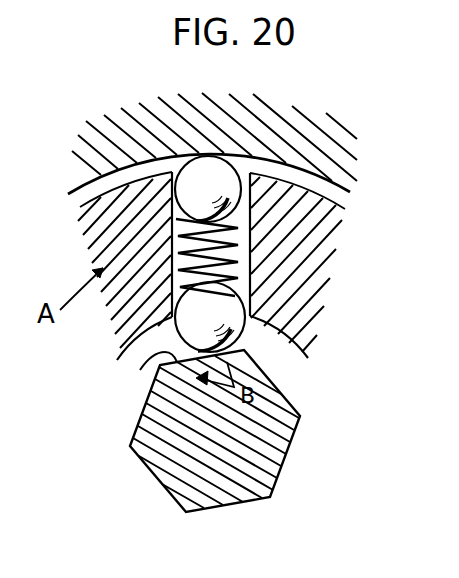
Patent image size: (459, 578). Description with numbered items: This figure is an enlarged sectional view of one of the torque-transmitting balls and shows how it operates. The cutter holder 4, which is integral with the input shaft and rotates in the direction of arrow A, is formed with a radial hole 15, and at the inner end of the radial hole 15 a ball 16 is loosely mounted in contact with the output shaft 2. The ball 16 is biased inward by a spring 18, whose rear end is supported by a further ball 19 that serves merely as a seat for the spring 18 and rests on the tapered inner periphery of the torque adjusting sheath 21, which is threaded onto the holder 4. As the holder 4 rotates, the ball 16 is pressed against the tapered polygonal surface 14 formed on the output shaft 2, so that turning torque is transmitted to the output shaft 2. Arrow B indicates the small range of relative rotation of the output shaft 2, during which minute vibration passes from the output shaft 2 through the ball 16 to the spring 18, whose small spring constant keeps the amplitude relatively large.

The output shaft 2 is at (155, 438).
The cutter holder 4 is at (92, 230).
The tapered polygonal surface 14 is at (140, 370).
The radial hole 15 is at (253, 223).
The ball 16 is at (246, 296).
The spring 18 is at (250, 256).
The ball 19 is at (196, 170).
The torque adjusting sheath 21 is at (250, 123).